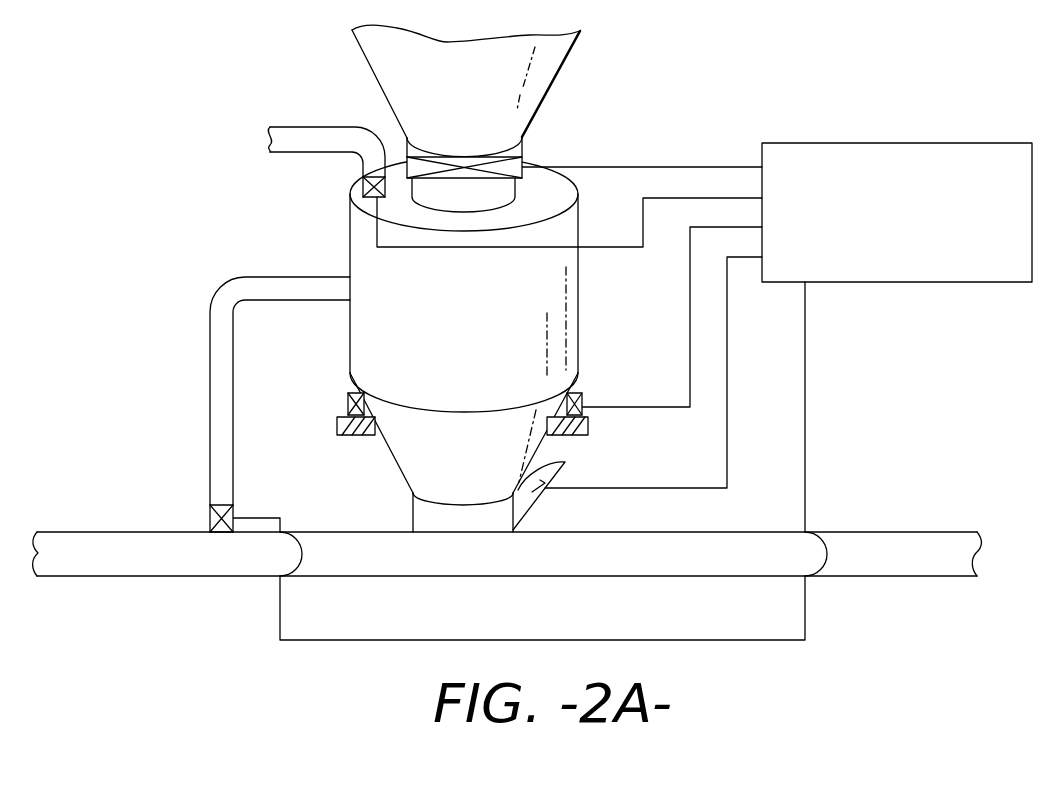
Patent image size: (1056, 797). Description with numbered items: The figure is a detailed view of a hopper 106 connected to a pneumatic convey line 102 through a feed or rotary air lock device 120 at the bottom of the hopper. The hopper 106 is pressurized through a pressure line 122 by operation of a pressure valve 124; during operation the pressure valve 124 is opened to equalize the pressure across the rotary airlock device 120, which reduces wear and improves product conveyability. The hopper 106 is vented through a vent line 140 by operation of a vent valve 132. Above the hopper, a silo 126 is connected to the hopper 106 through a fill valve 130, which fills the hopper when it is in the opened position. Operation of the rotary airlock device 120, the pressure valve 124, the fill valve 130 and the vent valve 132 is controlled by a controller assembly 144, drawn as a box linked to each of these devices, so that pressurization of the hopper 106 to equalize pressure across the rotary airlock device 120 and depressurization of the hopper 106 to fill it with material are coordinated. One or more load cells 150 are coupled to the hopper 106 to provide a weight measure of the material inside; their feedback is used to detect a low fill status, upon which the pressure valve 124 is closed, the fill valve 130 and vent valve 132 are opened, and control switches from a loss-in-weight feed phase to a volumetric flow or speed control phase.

The pneumatic convey line 102 is at (870, 531).
The hopper 106 is at (483, 325).
The rotary air lock device 120 is at (433, 515).
The pressure line 122 is at (207, 378).
The pressure valve 124 is at (207, 518).
The silo 126 is at (483, 95).
The fill valve 130 is at (526, 160).
The vent valve 132 is at (360, 179).
The vent line 140 is at (300, 125).
The controller assembly 144 is at (893, 143).
The load cells 150 is at (346, 394).